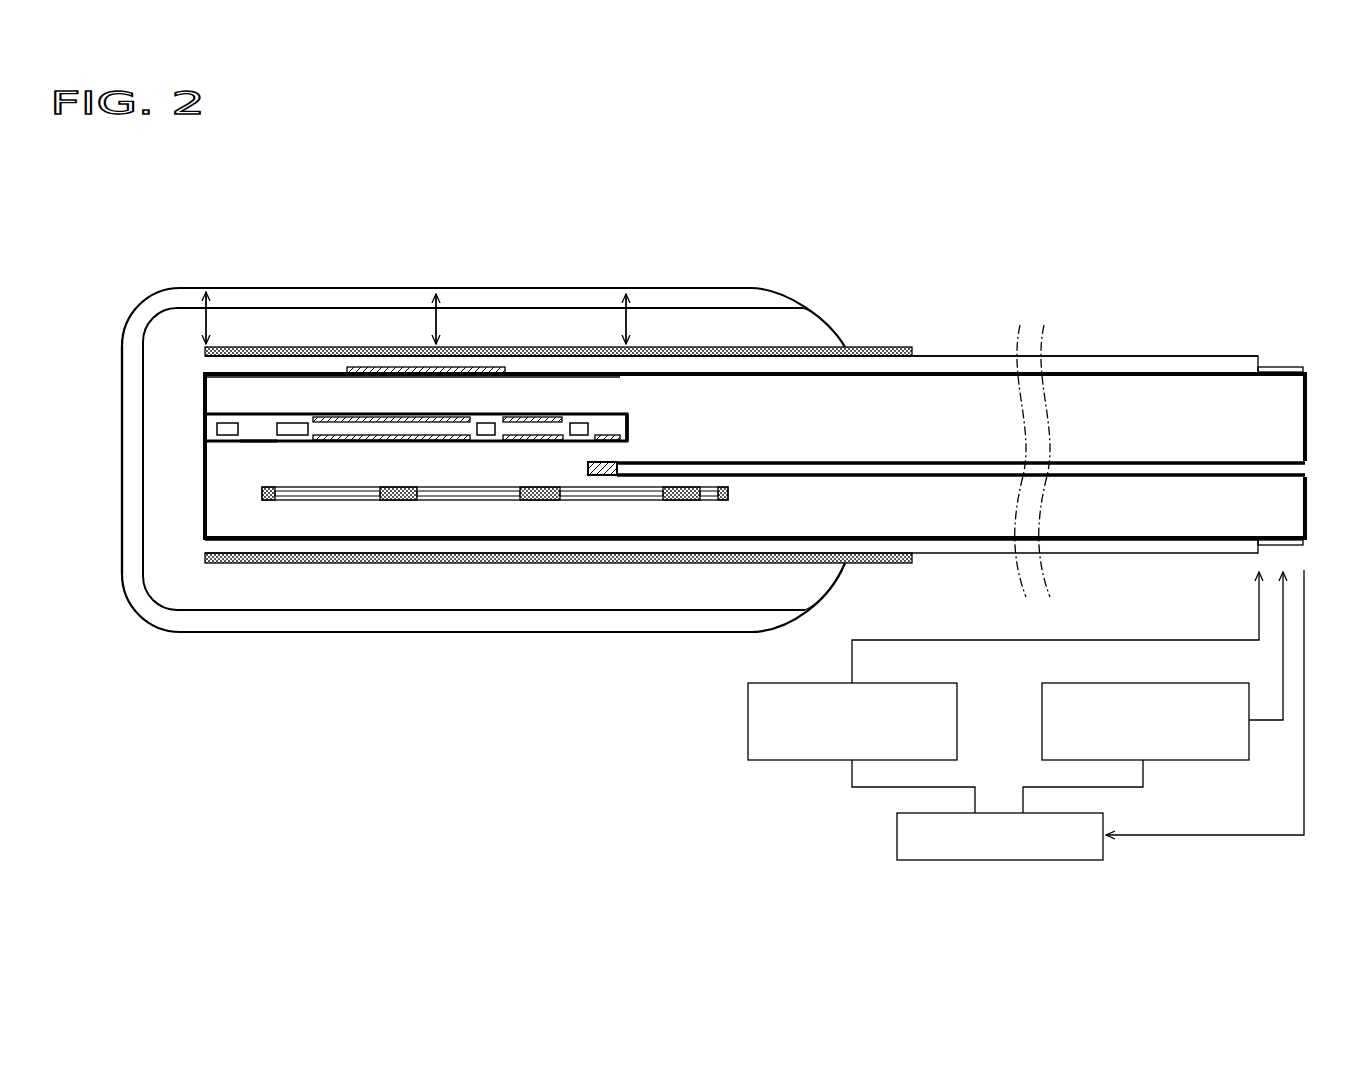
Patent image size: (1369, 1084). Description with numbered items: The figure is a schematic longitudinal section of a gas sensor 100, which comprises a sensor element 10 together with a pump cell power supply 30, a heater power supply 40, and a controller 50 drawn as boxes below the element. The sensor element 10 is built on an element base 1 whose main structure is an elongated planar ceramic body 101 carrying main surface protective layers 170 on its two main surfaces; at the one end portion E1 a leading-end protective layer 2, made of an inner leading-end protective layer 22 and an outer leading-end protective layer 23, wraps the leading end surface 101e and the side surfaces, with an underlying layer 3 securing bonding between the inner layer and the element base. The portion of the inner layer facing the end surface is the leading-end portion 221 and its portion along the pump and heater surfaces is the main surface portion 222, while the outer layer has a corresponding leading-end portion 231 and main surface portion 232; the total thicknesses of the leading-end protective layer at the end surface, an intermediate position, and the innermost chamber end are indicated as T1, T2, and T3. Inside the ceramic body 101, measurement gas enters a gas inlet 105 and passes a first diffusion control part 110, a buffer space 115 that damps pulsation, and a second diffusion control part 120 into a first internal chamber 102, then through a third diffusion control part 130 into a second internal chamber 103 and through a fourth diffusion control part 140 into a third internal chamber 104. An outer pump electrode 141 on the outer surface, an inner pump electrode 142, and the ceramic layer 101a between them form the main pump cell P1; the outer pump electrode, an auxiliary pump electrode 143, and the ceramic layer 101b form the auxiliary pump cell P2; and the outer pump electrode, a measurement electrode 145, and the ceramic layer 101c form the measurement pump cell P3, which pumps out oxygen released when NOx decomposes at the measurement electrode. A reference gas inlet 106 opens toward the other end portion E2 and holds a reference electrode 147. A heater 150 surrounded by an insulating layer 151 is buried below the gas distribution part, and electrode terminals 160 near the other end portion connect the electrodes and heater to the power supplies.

The element base 1 is at (933, 350).
The leading-end protective layer 2 is at (826, 234).
The underlying layer 3 is at (722, 346).
The sensor element 10 is at (722, 190).
The inner leading-end protective layer 22 is at (762, 322).
The outer leading-end protective layer 23 is at (796, 302).
The pump cell power supply 30 is at (1188, 761).
The heater power supply 40 is at (797, 761).
The controller 50 is at (999, 861).
The gas sensor 100 is at (651, 808).
The ceramic body 101 is at (1199, 400).
The ceramic layer 101a is at (296, 392).
The ceramic layer 101b is at (512, 392).
The ceramic layer 101c is at (630, 416).
The leading end surface 101e is at (203, 387).
The first internal chamber 102 is at (378, 365).
The second internal chamber 103 is at (518, 434).
The third internal chamber 104 is at (630, 424).
The gas inlet 105 is at (204, 430).
The reference gas inlet 106 is at (1294, 469).
The first diffusion control part 110 is at (232, 421).
The buffer space 115 is at (262, 440).
The second diffusion control part 120 is at (290, 421).
The third diffusion control part 130 is at (486, 421).
The fourth diffusion control part 140 is at (579, 421).
The outer pump electrode 141 is at (392, 416).
The inner pump electrode 142 is at (335, 434).
The auxiliary pump electrode 143 is at (548, 416).
The measurement electrode 145 is at (606, 434).
The reference electrode 147 is at (600, 478).
The heater 150 is at (498, 494).
The insulating layer 151 is at (405, 489).
The electrode terminals 160 is at (1282, 368).
The main surface protective layers 170 is at (1086, 362).
The leading-end portion 221 is at (160, 377).
The main surface portion 222 is at (282, 588).
The leading-end portion 231 is at (118, 349).
The main surface portion 232 is at (338, 634).
The one end portion E1 is at (116, 468).
The other end portion E2 is at (1328, 422).
The total thickness T1 is at (206, 292).
The total thickness T2 is at (436, 294).
The total thickness T3 is at (626, 294).
The main pump cell P1 is at (397, 227).
The auxiliary pump cell P2 is at (562, 222).
The measurement pump cell P3 is at (398, 222).